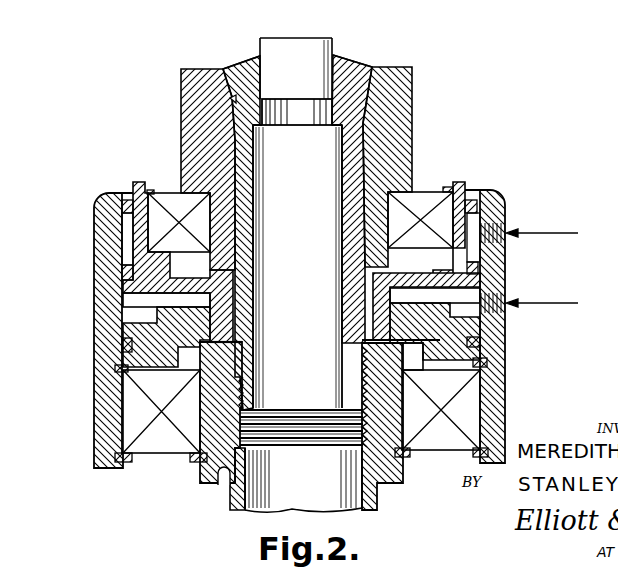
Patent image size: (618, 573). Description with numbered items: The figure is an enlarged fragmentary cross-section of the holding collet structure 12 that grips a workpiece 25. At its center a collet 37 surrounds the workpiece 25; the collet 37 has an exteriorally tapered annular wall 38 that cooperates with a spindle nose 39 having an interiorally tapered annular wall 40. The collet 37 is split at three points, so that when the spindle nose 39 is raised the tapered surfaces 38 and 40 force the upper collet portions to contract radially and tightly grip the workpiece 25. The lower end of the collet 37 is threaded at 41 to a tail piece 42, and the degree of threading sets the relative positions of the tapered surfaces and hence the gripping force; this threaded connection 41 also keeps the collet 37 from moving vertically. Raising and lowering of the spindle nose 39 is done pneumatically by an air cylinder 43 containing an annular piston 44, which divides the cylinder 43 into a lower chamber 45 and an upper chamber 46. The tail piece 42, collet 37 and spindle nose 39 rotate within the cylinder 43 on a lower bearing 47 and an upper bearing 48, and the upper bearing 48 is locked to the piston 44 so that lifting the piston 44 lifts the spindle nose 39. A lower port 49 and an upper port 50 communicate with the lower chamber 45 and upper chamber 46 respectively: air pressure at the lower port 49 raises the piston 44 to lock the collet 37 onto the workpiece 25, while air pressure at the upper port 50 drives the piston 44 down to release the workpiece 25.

The holding collet structure 12 is at (192, 69).
The workpiece 25 is at (270, 52).
The collet 37 is at (353, 63).
The exteriorally tapered annular wall 38 is at (373, 92).
The spindle nose 39 is at (412, 115).
The interiorally tapered annular wall 40 is at (230, 102).
The threaded connection 41 is at (242, 390).
The tail piece 42 is at (205, 481).
The air cylinder 43 is at (107, 392).
The annular piston 44 is at (133, 258).
The lower chamber 45 is at (133, 308).
The upper chamber 46 is at (120, 235).
The lower bearing 47 is at (133, 430).
The upper bearing 48 is at (173, 200).
The lower port 49 is at (547, 302).
The upper port 50 is at (547, 232).